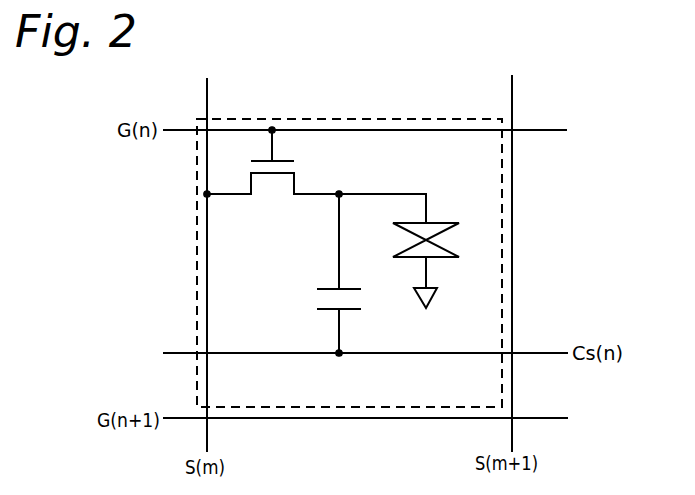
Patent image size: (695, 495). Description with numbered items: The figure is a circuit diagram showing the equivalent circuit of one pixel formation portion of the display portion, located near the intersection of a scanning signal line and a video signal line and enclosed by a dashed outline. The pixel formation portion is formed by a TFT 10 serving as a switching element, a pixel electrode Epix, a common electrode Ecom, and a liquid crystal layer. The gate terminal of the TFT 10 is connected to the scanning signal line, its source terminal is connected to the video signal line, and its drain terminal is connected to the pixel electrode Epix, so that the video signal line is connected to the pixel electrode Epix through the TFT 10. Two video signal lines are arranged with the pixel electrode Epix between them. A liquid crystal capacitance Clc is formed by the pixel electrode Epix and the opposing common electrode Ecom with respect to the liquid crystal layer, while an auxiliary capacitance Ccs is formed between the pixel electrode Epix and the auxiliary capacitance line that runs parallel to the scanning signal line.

The TFT 10 is at (297, 166).
The pixel electrode Epix is at (341, 193).
The auxiliary capacitance Ccs is at (369, 300).
The liquid crystal capacitance Clc is at (447, 233).
The common electrode Ecom is at (429, 310).